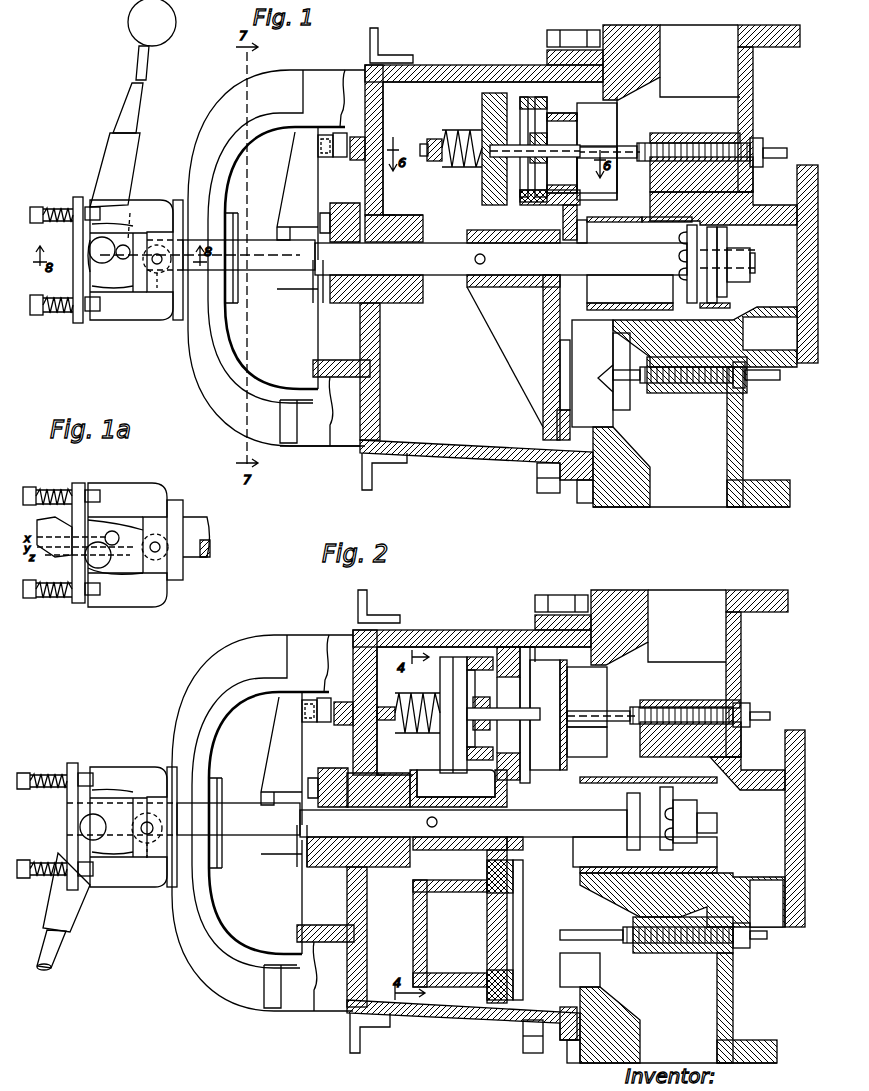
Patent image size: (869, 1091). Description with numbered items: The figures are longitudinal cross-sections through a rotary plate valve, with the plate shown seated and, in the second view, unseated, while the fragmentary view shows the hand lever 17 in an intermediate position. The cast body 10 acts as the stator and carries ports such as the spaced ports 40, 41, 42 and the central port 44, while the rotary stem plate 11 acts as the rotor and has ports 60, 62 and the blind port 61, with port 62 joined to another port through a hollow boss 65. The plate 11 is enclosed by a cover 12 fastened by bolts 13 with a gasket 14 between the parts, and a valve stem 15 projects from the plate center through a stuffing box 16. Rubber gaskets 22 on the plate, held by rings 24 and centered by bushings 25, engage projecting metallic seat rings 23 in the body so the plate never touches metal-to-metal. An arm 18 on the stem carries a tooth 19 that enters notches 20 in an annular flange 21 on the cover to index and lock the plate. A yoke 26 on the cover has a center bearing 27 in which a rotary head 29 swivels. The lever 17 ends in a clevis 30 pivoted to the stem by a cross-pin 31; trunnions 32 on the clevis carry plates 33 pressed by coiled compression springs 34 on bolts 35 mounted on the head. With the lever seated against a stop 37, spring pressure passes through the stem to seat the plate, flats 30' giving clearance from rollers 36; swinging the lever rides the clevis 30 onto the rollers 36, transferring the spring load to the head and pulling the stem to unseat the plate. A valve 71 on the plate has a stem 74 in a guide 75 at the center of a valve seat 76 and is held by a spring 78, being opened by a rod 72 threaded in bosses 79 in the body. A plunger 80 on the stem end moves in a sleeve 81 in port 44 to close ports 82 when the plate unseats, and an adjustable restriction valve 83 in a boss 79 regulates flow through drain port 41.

In FIG. 1, the body 10 is at (754, 83).
In FIG. 2, the body 10 is at (742, 652).
In FIG. 1, the rotary stem plate 11 is at (548, 386).
In FIG. 2, the rotary stem plate 11 is at (507, 850).
In FIG. 1, the cover 12 is at (451, 462).
In FIG. 2, the cover 12 is at (464, 1015).
In FIG. 1, the bolts 13 is at (540, 495).
In FIG. 1, the gasket 14 is at (580, 504).
In FIG. 1, the valve stem 15 is at (446, 280).
In FIG. 1A, the valve stem 15 is at (205, 527).
In FIG. 2, the valve stem 15 is at (281, 840).
In FIG. 1, the stuffing box 16 is at (390, 215).
In FIG. 2, the stuffing box 16 is at (386, 779).
In FIG. 1, the hand lever 17 is at (142, 112).
In FIG. 1A, the hand lever 17 is at (54, 537).
In FIG. 2, the hand lever 17 is at (53, 951).
In FIG. 1, the arm 18 is at (290, 186).
In FIG. 2, the arm 18 is at (256, 760).
In FIG. 1, the tooth 19 is at (345, 133).
In FIG. 2, the tooth 19 is at (284, 688).
In FIG. 1, the notches 20 is at (385, 120).
In FIG. 2, the notches 20 is at (336, 702).
In FIG. 1, the annular flange 21 is at (368, 160).
In FIG. 2, the annular flange 21 is at (353, 718).
In FIG. 1, the gaskets 22 is at (547, 65).
In FIG. 2, the gaskets 22 is at (521, 645).
In FIG. 1, the seat rings 23 is at (623, 118).
In FIG. 2, the seat rings 23 is at (643, 706).
In FIG. 1, the rings 24 is at (580, 220).
In FIG. 2, the rings 24 is at (531, 652).
In FIG. 1, the bushings 25 is at (553, 147).
In FIG. 2, the bushings 25 is at (521, 681).
In FIG. 1, the yoke 26 is at (221, 418).
In FIG. 2, the yoke 26 is at (206, 985).
In FIG. 1, the center bearing 27 is at (190, 300).
In FIG. 2, the center bearing 27 is at (180, 790).
In FIG. 1, the rotary head 29 is at (136, 320).
In FIG. 1A, the rotary head 29 is at (140, 601).
In FIG. 2, the rotary head 29 is at (150, 888).
In FIG. 1, the clevis 30 is at (112, 272).
In FIG. 1A, the clevis 30 is at (115, 548).
In FIG. 2, the clevis 30 is at (112, 798).
In FIG. 1, the flats 30' is at (107, 297).
In FIG. 1A, the flats 30' is at (115, 530).
In FIG. 1, the cross-pin 31 is at (127, 250).
In FIG. 1A, the cross-pin 31 is at (116, 534).
In FIG. 1, the trunnions 32 is at (103, 237).
In FIG. 1A, the trunnions 32 is at (98, 558).
In FIG. 2, the trunnions 32 is at (97, 841).
In FIG. 1, the plates 33 is at (76, 324).
In FIG. 1A, the plates 33 is at (76, 601).
In FIG. 2, the plates 33 is at (55, 826).
In FIG. 1, the coiled compression springs 34 is at (52, 205).
In FIG. 1A, the coiled compression springs 34 is at (52, 601).
In FIG. 1, the bolts 35 is at (35, 205).
In FIG. 1A, the bolts 35 is at (35, 488).
In FIG. 1, the rollers 36 is at (155, 276).
In FIG. 1A, the rollers 36 is at (166, 540).
In FIG. 2, the rollers 36 is at (143, 845).
In FIG. 1, the stop 37 is at (142, 210).
In FIG. 1, the port 40 is at (597, 173).
In FIG. 2, the port 40 is at (587, 742).
In FIG. 1, the port 41 is at (592, 373).
In FIG. 2, the port 42 is at (580, 969).
In FIG. 1, the central port 44 is at (630, 289).
In FIG. 2, the central port 44 is at (645, 855).
In FIG. 1, the port 60 is at (562, 153).
In FIG. 2, the port 60 is at (508, 713).
In FIG. 1, the blind port 61 is at (552, 358).
In FIG. 2, the port 62 is at (505, 930).
In FIG. 2, the hollow boss 65 is at (413, 926).
In FIG. 1, the valve 71 is at (482, 106).
In FIG. 2, the valve 71 is at (456, 727).
In FIG. 1, the rod 72 is at (650, 147).
In FIG. 2, the rod 72 is at (620, 710).
In FIG. 1, the stem 74 is at (578, 145).
In FIG. 2, the stem 74 is at (541, 706).
In FIG. 1, the guide 75 is at (528, 130).
In FIG. 2, the guide 75 is at (503, 708).
In FIG. 1, the valve seat 76 is at (525, 206).
In FIG. 2, the valve seat 76 is at (457, 657).
In FIG. 1, the coiled compression spring 78 is at (462, 166).
In FIG. 2, the coiled compression spring 78 is at (406, 734).
In FIG. 1, the bosses 79 is at (715, 133).
In FIG. 2, the bosses 79 is at (678, 700).
In FIG. 1, the plunger 80 is at (731, 288).
In FIG. 2, the plunger 80 is at (710, 827).
In FIG. 1, the sleeve 81 is at (703, 309).
In FIG. 1, the ports 82 is at (688, 219).
In FIG. 2, the ports 82 is at (676, 778).
In FIG. 1, the adjustable restriction valve 83 is at (612, 372).